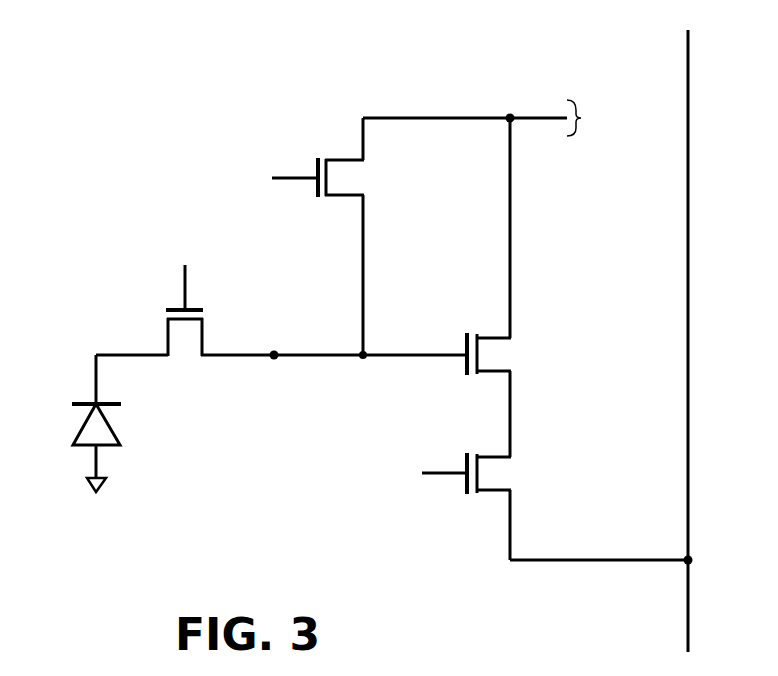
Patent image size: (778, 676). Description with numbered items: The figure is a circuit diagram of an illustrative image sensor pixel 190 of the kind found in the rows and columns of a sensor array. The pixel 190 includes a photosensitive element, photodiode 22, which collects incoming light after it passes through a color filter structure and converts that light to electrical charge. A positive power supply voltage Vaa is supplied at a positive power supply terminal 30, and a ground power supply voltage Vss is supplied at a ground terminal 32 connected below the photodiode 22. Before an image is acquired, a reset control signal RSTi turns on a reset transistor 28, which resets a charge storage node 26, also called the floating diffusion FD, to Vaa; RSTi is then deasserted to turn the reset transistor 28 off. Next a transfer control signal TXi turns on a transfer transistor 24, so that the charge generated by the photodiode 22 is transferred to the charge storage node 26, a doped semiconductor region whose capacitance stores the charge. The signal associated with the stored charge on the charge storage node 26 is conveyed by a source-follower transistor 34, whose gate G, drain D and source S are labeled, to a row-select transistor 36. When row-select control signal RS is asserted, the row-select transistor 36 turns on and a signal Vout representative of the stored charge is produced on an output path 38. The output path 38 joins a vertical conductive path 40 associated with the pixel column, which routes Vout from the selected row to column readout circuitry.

The image sensor pixel 190 is at (154, 112).
The photodiode 22 is at (90, 425).
The transfer transistor 24 is at (173, 338).
The charge storage node 26 is at (274, 350).
The reset transistor 28 is at (345, 162).
The positive power supply terminal 30 is at (548, 115).
The ground terminal 32 is at (92, 487).
The source-follower transistor 34 is at (493, 330).
The row-select transistor 36 is at (493, 486).
The output path 38 is at (598, 562).
The vertical conductive path 40 is at (690, 397).